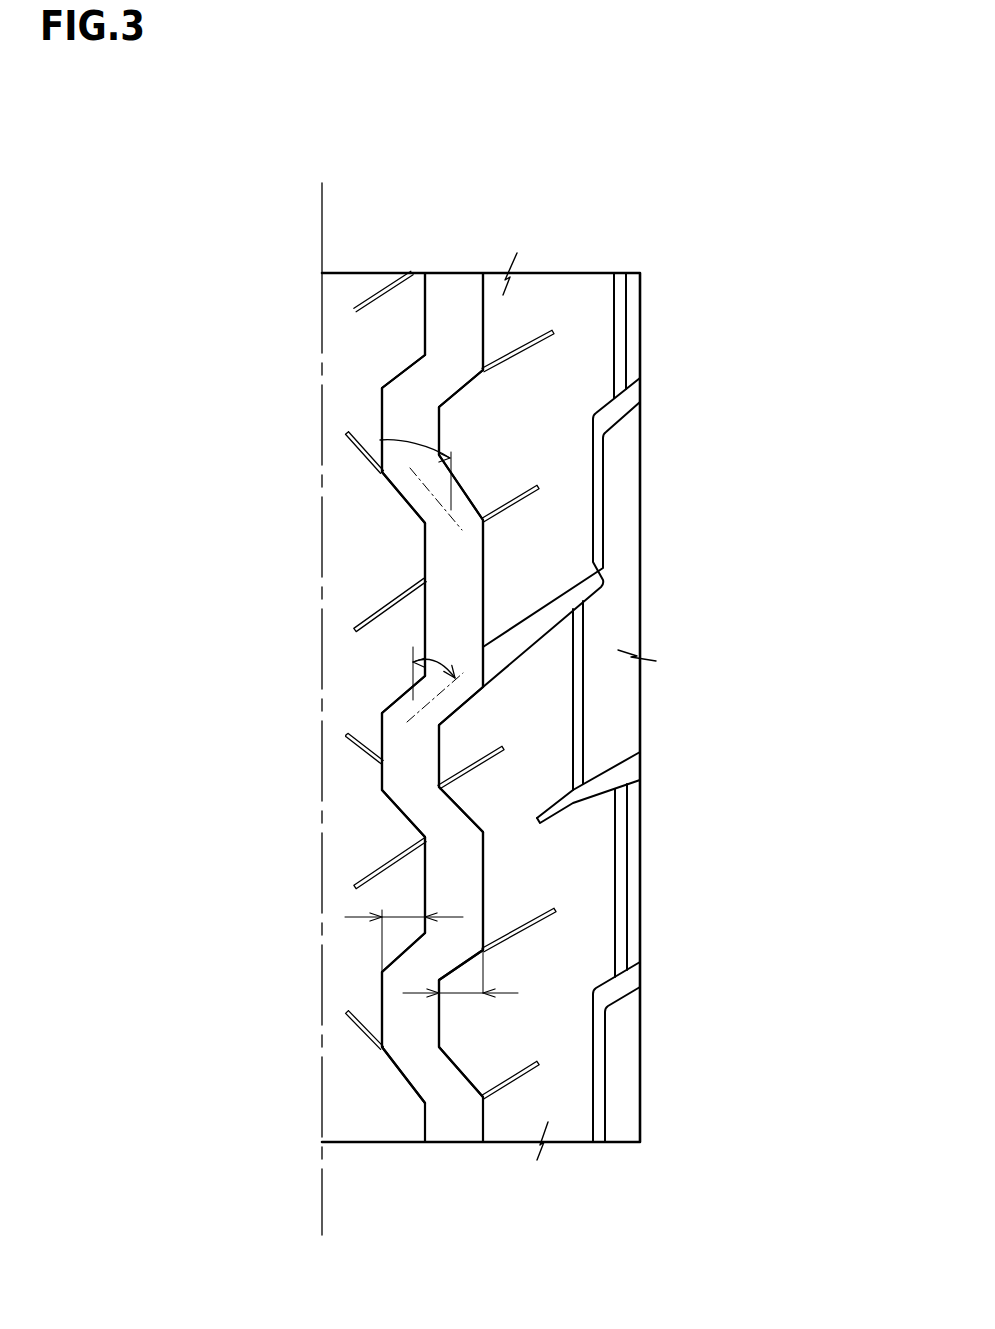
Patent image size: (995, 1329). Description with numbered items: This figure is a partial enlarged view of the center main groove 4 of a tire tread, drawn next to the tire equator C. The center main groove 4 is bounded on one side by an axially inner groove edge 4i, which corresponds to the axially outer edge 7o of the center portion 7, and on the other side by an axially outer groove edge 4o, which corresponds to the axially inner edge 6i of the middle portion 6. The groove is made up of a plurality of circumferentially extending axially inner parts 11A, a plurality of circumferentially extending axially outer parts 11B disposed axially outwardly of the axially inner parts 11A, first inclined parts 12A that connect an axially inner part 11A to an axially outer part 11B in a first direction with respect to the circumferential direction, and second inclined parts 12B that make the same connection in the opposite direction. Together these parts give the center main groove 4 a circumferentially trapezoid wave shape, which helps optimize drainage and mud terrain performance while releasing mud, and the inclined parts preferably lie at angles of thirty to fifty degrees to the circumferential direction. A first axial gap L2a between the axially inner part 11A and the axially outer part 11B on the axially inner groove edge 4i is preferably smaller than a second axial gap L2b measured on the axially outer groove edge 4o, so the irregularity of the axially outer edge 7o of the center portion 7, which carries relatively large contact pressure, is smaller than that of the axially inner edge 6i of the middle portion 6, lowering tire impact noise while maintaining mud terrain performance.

The tire equator (center line) C is at (323, 695).
The center main groove 4 is at (601, 773).
The axially inner groove edge 4i is at (403, 707).
The axially outer edge of the center portion 7o is at (428, 1123).
The axially outer groove edge 4o is at (461, 707).
The axially inner edge of the middle portion 6i is at (482, 1122).
The middle portion 6 is at (539, 315).
The center portion 7 is at (341, 333).
The axially inner part 11A is at (413, 433).
The first inclined part 12A is at (458, 510).
The axially outer part 11B is at (458, 588).
The second inclined part 12B is at (788, 350).
The first axial gap L2a is at (405, 917).
The second axial gap L2b is at (460, 993).